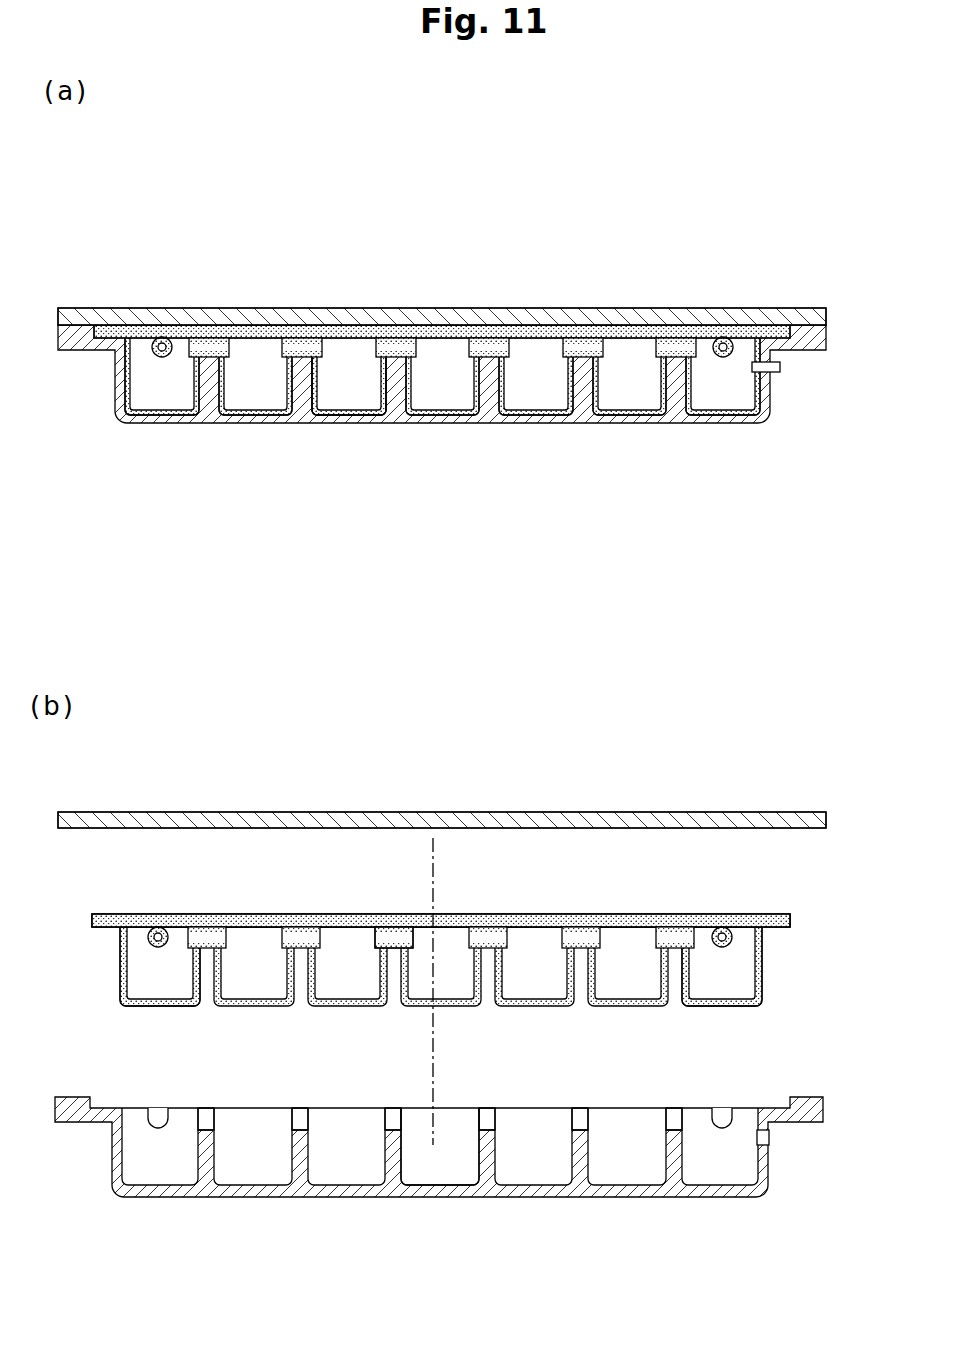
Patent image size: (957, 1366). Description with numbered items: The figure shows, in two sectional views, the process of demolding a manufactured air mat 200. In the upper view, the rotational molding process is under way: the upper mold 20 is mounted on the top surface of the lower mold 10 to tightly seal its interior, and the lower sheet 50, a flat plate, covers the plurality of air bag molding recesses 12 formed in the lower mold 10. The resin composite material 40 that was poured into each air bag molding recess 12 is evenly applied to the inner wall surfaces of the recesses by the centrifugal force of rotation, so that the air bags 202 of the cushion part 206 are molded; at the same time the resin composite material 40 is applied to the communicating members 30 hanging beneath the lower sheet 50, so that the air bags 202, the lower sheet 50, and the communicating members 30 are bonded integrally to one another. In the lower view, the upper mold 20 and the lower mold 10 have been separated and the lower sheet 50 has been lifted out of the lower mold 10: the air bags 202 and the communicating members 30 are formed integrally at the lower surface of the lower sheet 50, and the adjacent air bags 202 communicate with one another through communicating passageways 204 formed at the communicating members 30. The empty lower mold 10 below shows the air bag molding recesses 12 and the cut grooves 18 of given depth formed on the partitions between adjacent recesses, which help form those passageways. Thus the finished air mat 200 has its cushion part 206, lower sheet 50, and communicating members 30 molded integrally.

The lower mold 10 is at (150, 424).
The air bag molding recess 12 is at (268, 385).
The cut groove 18 is at (210, 1122).
The upper mold 20 is at (253, 350).
The communicating member 30 is at (386, 355).
The resin composite material 40 is at (440, 400).
The lower sheet 50 is at (143, 330).
The air mat 200 is at (105, 963).
The air bag 202 is at (245, 1007).
The communicating passageway 204 is at (370, 937).
The cushion part 206 is at (133, 1006).